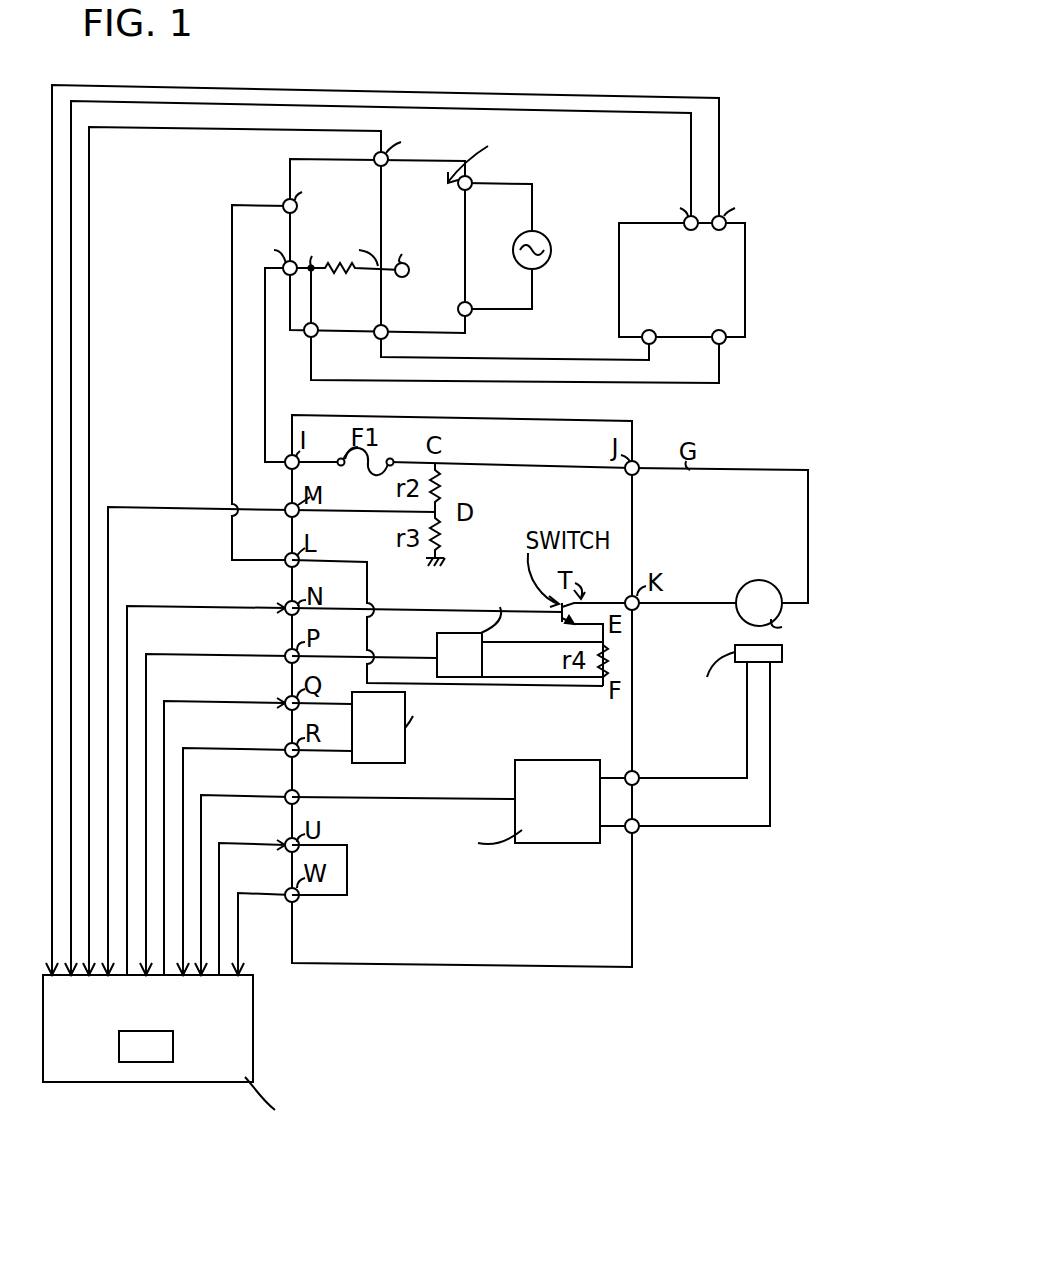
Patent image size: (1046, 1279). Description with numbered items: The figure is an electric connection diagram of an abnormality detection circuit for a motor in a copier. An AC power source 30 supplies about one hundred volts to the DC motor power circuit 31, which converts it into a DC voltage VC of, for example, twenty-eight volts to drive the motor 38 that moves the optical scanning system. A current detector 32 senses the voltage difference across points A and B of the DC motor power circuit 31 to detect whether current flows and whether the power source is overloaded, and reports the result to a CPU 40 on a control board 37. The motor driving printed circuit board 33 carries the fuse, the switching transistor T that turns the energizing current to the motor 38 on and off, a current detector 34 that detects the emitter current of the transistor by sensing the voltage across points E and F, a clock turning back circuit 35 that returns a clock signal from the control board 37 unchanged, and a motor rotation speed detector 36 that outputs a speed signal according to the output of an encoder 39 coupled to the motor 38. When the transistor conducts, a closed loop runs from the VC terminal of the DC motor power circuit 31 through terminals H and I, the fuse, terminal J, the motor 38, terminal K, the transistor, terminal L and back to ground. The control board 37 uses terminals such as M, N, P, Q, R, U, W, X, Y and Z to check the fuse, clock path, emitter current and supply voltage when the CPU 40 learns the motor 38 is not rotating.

The AC power source 30 is at (543, 236).
The DC motor power circuit 31 is at (486, 248).
The current detector 32 is at (745, 297).
The motor driving printed circuit board 33 is at (582, 447).
The current detector 34 is at (437, 648).
The clock turning back circuit 35 is at (395, 757).
The motor rotation speed detector 36 is at (545, 843).
The control board 37 is at (215, 1052).
The motor 38 is at (757, 580).
The encoder 39 is at (777, 662).
The CPU 40 is at (148, 1031).